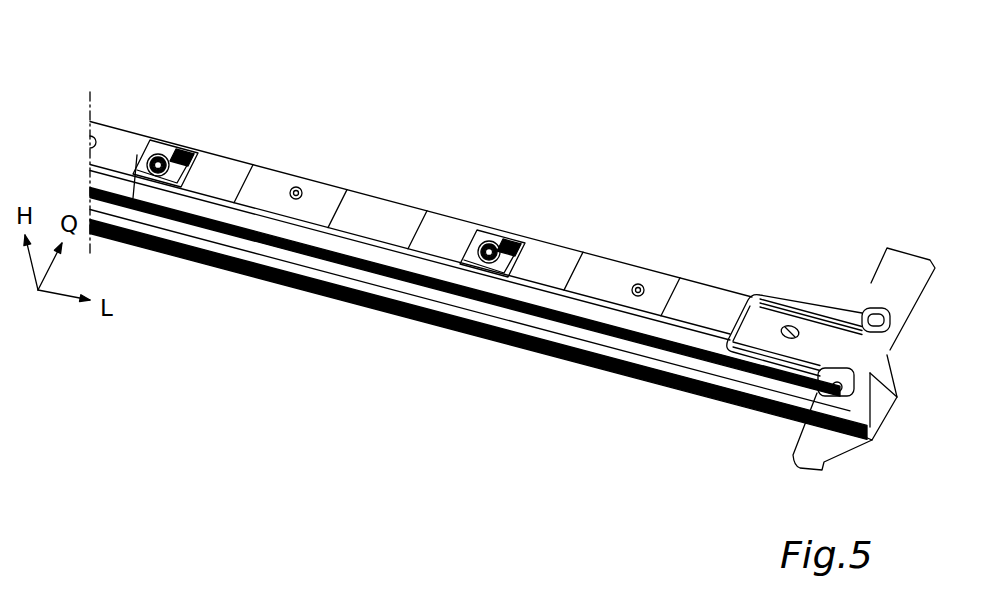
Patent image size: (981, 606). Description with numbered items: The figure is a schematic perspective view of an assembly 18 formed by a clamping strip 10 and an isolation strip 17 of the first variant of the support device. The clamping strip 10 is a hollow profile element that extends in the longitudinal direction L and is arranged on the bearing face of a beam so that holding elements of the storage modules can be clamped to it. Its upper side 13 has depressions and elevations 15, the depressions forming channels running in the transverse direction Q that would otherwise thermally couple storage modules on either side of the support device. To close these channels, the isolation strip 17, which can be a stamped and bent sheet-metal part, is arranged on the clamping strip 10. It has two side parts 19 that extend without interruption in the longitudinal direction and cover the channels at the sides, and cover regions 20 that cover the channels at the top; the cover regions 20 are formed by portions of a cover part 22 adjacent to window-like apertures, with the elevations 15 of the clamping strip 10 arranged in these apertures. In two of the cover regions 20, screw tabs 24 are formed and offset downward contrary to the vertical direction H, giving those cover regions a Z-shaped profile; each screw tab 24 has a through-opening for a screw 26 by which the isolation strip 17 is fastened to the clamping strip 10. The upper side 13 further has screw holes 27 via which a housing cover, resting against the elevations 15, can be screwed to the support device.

The clamping strip 10 is at (123, 125).
The upper side 13 is at (767, 321).
The elevations 15 is at (272, 176).
The isolation strip 17 is at (223, 148).
The assembly 18 is at (681, 156).
The side parts 19 is at (367, 248).
The cover regions 20 is at (622, 328).
The cover part 22 is at (716, 286).
The screw tabs 24 is at (188, 140).
The screw 26 is at (160, 150).
The screw holes 27 is at (298, 187).